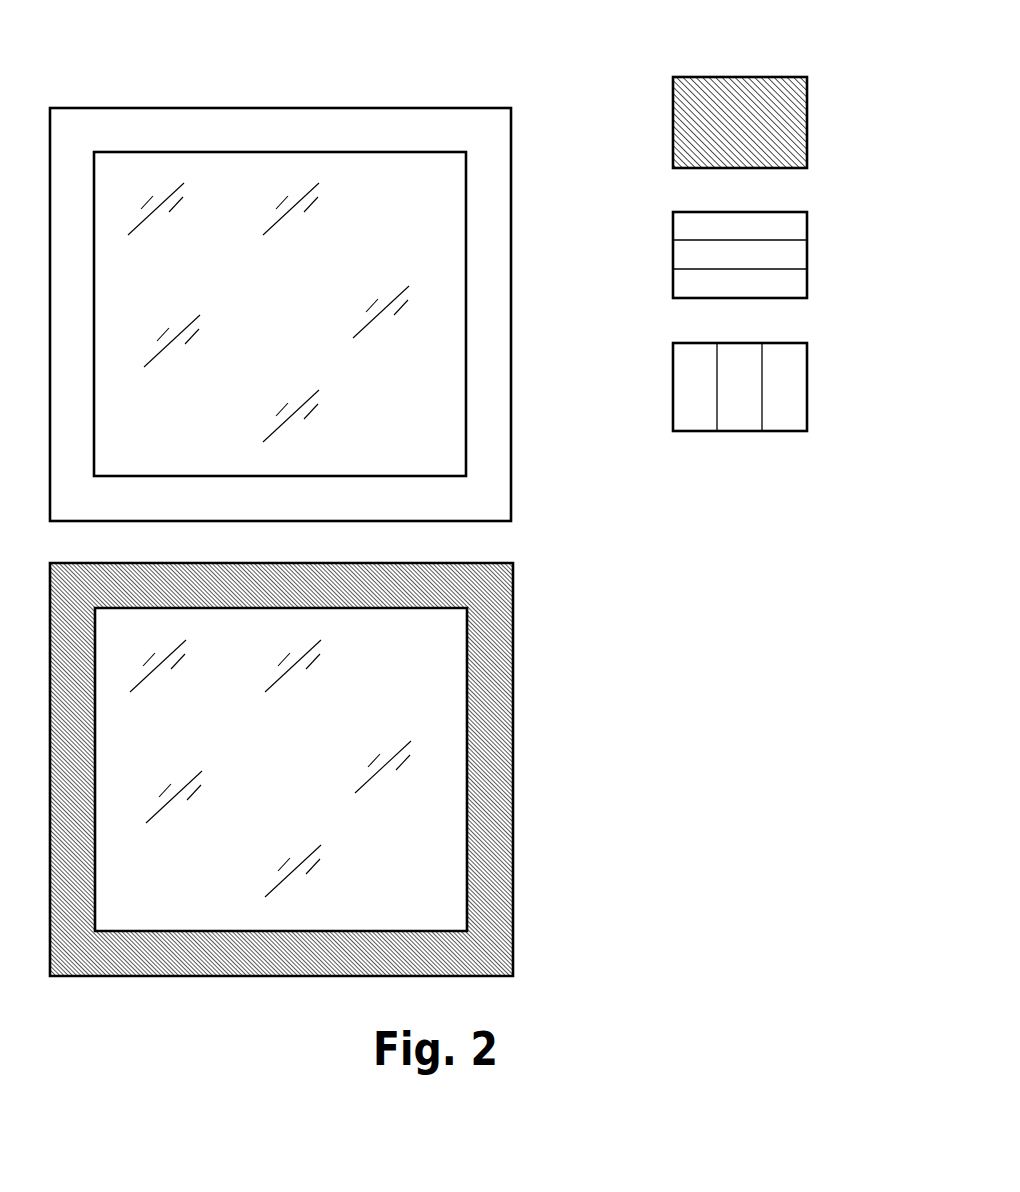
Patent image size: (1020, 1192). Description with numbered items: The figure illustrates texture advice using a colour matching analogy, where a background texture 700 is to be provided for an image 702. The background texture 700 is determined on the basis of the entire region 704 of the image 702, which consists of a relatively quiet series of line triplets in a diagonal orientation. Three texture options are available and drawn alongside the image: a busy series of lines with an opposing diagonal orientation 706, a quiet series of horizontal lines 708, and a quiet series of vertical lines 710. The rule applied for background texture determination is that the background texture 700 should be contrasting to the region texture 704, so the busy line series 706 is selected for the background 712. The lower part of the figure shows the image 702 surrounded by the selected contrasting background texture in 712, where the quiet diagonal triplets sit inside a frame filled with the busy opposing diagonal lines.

The background texture 700 is at (153, 123).
The image 702 is at (381, 150).
The image region 704 is at (435, 270).
The busy line series texture option 706 is at (808, 122).
The horizontal line texture option 708 is at (808, 253).
The vertical line texture option 710 is at (808, 385).
The background with selected texture 712 is at (545, 628).